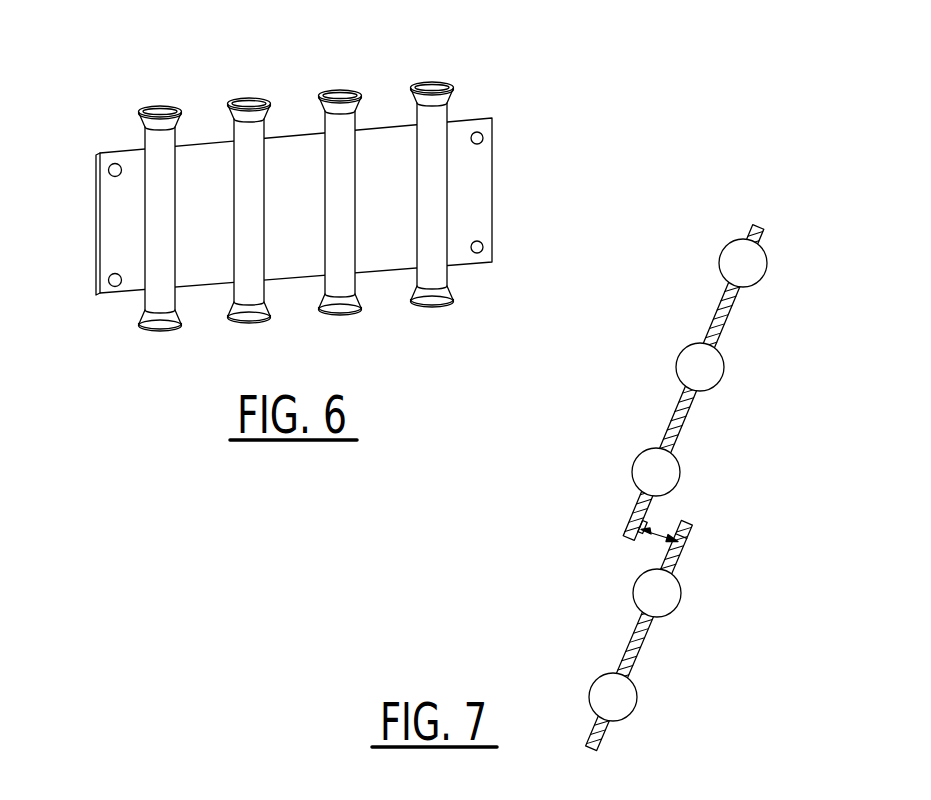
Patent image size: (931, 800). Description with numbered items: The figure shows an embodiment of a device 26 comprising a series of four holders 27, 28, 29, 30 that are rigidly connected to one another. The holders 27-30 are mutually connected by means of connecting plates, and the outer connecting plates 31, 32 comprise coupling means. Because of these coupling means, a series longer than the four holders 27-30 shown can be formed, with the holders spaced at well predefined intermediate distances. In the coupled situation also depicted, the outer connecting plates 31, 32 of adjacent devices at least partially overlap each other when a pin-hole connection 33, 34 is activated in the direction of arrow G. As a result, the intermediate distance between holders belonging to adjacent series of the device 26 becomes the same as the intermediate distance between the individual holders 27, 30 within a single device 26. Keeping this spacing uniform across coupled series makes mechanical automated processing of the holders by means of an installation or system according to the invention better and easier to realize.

In FIG. 6, the device 26 is at (310, 52).
In FIG. 6, the holder 27 is at (163, 253).
In FIG. 6, the holder 28 is at (255, 253).
In FIG. 6, the holder 29 is at (348, 250).
In FIG. 6, the holder 30 is at (428, 252).
In FIG. 6, the outer connecting plate 31 is at (108, 221).
In FIG. 6, the outer connecting plate 32 is at (480, 178).
In FIG. 7, the pin-hole connection 33 is at (637, 541).
In FIG. 7, the pin-hole connection 34 is at (685, 544).
In FIG. 7, the arrow G is at (661, 519).